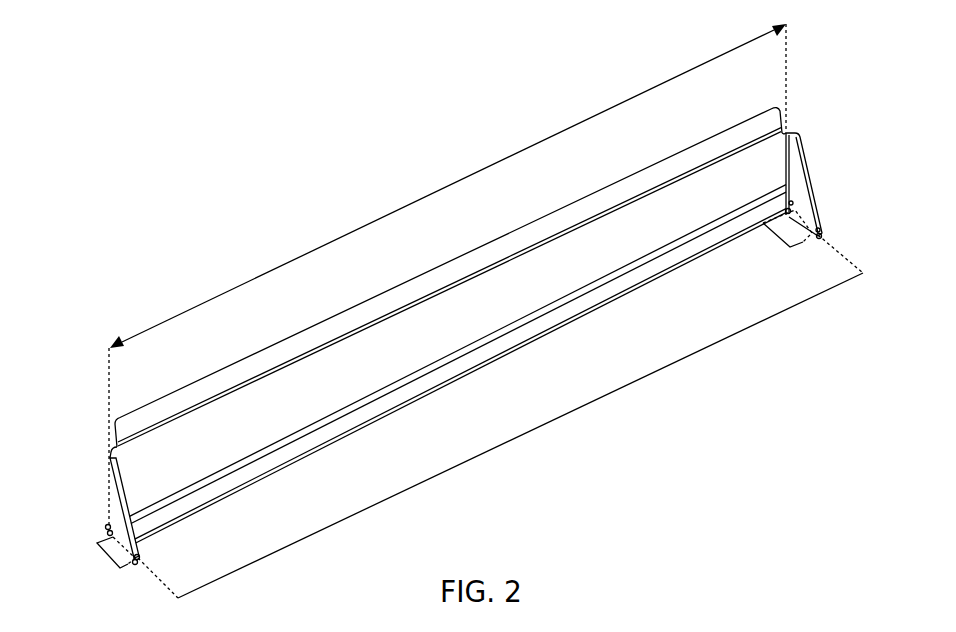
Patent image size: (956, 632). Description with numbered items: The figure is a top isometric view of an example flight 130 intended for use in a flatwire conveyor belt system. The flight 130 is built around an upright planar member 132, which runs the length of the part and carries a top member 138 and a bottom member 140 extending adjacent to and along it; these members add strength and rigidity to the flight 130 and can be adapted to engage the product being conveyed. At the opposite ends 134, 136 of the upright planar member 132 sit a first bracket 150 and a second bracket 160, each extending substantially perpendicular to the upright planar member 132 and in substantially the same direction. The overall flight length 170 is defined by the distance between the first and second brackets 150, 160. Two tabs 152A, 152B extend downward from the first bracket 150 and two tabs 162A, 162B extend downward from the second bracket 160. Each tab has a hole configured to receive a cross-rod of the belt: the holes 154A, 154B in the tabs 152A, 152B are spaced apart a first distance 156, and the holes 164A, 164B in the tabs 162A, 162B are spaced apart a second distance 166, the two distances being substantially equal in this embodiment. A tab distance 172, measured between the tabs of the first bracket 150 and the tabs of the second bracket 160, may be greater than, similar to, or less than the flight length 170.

The flight 130 is at (186, 271).
The upright planar member 132 is at (525, 308).
The first end of the upright planar member 134 is at (121, 455).
The second end of the upright planar member 136 is at (783, 134).
The top member 138 is at (568, 206).
The bottom member 140 is at (628, 291).
The first bracket 150 is at (110, 487).
The first tab of the first bracket 152A is at (107, 526).
The second tab of the first bracket 152B is at (135, 564).
The hole in the first tab of the first bracket 154A is at (107, 533).
The hole in the second tab of the first bracket 154B is at (139, 556).
The first distance 156 is at (106, 560).
The second bracket 160 is at (806, 180).
The first tab of the second bracket 162A is at (792, 203).
The second tab of the second bracket 162B is at (820, 230).
The hole in the first tab of the second bracket 164A is at (787, 208).
The hole in the second tab of the second bracket 164B is at (819, 238).
The second distance 166 is at (766, 227).
The flight length 170 is at (452, 186).
The tab distance 172 is at (568, 415).